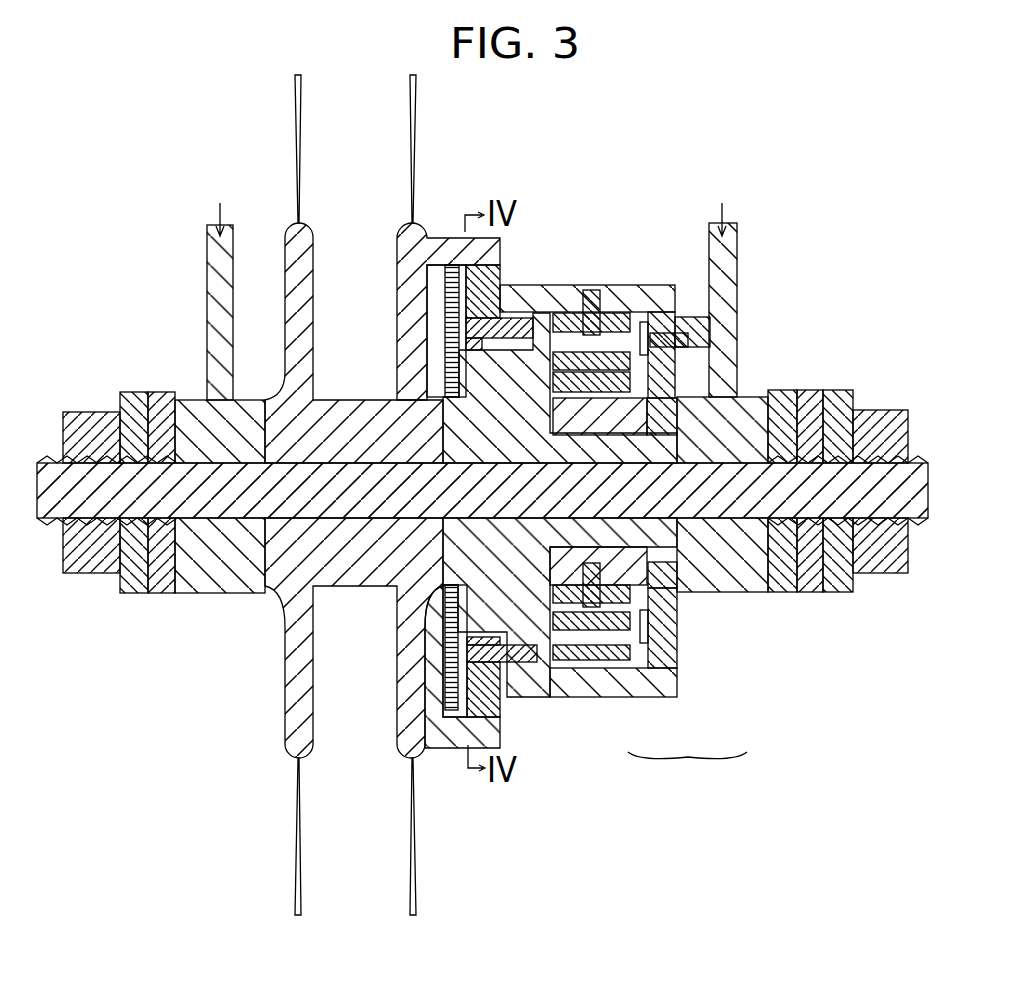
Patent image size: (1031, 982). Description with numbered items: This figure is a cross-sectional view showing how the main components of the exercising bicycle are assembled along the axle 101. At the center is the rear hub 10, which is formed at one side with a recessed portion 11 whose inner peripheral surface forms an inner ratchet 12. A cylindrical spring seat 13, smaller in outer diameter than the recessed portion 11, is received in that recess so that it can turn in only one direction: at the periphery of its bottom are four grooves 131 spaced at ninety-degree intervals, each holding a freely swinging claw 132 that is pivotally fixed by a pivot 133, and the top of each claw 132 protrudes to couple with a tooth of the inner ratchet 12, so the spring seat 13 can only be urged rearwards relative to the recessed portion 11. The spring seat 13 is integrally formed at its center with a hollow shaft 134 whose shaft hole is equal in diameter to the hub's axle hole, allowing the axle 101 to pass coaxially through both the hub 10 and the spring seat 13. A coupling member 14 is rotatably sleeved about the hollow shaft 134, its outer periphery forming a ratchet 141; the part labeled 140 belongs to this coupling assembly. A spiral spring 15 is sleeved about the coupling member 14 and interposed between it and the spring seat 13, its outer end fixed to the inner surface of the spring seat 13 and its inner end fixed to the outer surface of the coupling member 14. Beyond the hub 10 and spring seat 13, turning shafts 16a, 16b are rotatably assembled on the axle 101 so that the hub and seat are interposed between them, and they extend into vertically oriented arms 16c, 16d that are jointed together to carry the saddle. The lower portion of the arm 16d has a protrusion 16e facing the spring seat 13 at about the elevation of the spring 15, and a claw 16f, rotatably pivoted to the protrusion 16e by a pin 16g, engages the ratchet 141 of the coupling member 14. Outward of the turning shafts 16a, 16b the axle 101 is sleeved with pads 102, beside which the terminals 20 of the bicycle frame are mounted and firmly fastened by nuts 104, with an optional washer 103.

The rear hub 10 is at (413, 230).
The axle 101 is at (352, 490).
The recessed portion 11 is at (437, 290).
The inner ratchet 12 is at (498, 240).
The spring seat 13 is at (637, 287).
The grooves 131 is at (505, 700).
The claws 132 is at (500, 270).
The pivot 133 is at (535, 290).
The hollow shaft 134 is at (680, 608).
The coupling member 14 is at (687, 773).
The magnet 140 is at (662, 540).
The ratchet 141 is at (672, 660).
The spiral spring 15 is at (585, 697).
The turning shaft 16a is at (193, 410).
The turning shaft 16b is at (745, 405).
The arm 16c is at (212, 240).
The arm 16d is at (725, 248).
The protrusion 16e is at (717, 317).
The claw 16f is at (680, 380).
The pin 16g is at (712, 338).
The terminals 20 is at (130, 392).
The pads 102 is at (165, 594).
The washer 103 is at (860, 410).
The nuts 104 is at (910, 545).